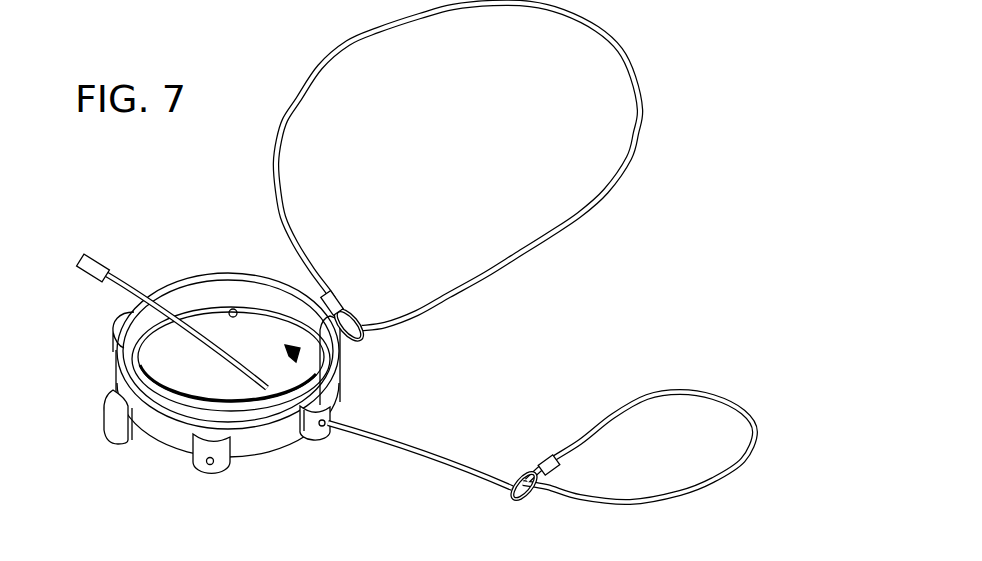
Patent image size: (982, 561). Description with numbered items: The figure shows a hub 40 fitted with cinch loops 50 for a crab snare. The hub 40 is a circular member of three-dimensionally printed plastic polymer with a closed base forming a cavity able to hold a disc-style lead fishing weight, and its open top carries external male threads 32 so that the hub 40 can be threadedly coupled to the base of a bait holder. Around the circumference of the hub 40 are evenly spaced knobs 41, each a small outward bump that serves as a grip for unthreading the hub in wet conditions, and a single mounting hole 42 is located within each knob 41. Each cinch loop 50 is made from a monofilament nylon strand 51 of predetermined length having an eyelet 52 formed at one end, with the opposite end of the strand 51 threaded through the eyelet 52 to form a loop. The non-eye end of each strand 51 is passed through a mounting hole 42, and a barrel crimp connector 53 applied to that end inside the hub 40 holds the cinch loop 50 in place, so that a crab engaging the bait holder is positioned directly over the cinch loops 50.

The external male threads 32 is at (117, 372).
The hub 40 is at (175, 331).
The knobs 41 is at (123, 432).
The mounting holes 42 is at (213, 463).
The cinch loops 50 is at (444, 253).
The monofilament nylon strand 51 is at (617, 412).
The eyelet 52 is at (523, 471).
The barrel crimp connector 53 is at (93, 258).